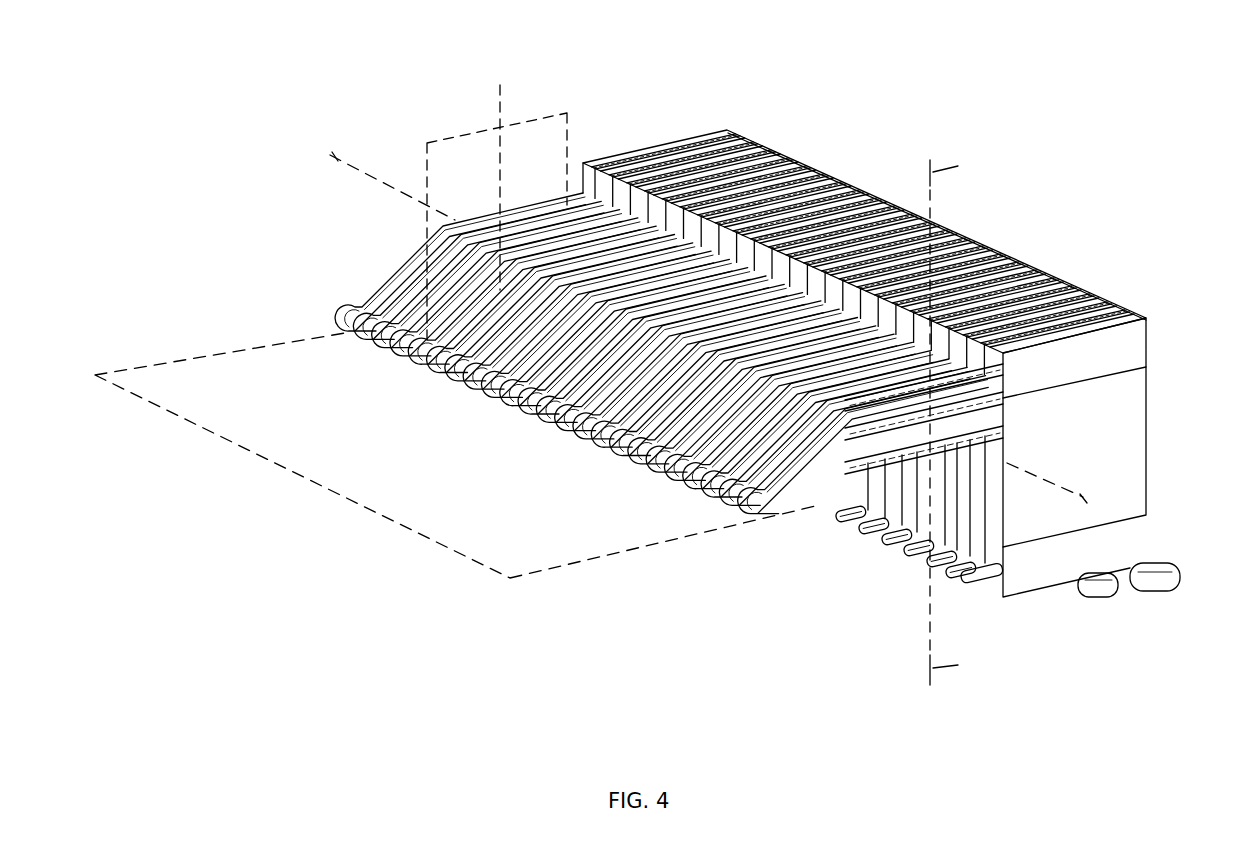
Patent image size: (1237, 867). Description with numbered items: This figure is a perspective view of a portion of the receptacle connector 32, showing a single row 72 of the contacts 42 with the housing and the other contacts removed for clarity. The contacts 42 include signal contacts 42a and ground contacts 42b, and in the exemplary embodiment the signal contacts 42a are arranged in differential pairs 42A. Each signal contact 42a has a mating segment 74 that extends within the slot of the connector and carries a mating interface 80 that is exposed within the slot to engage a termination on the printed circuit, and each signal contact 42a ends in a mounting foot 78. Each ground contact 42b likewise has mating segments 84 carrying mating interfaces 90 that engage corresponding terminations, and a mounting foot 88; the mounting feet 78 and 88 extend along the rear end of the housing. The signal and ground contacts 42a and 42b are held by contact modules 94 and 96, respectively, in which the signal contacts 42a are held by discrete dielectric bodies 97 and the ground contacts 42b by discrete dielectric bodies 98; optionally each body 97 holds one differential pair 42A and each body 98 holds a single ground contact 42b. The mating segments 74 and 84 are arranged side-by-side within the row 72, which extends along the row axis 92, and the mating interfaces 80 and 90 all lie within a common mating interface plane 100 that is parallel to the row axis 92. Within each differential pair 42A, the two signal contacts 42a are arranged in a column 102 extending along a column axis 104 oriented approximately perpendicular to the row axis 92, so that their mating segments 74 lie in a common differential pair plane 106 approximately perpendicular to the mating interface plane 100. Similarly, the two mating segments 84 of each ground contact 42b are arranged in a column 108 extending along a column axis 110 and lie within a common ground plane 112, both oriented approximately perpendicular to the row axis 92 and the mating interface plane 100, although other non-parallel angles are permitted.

The receptacle connector 32 is at (988, 86).
The contacts 42 is at (378, 348).
The differential pairs 42A is at (622, 462).
The signal contacts 42a is at (468, 396).
The ground contacts 42b is at (690, 490).
The row 72 is at (345, 267).
The mating segments 74 is at (855, 396).
The mounting feet 78 is at (1140, 572).
The mating interfaces 80 is at (745, 517).
The mating segments 84 is at (913, 555).
The mounting feet 88 is at (1155, 595).
The mating interfaces 90 is at (820, 500).
The row axis 92 is at (335, 158).
The contact modules 94 is at (762, 148).
The contact modules 96 is at (786, 156).
The dielectric bodies 97 is at (717, 137).
The dielectric bodies 98 is at (1120, 351).
The mating interface plane 100 is at (412, 548).
The column 102 is at (433, 380).
The column axis 104 is at (500, 85).
The differential pair plane 106 is at (528, 122).
The column 108 is at (981, 374).
The column axis 110 is at (966, 419).
The ground plane 112 is at (1003, 251).